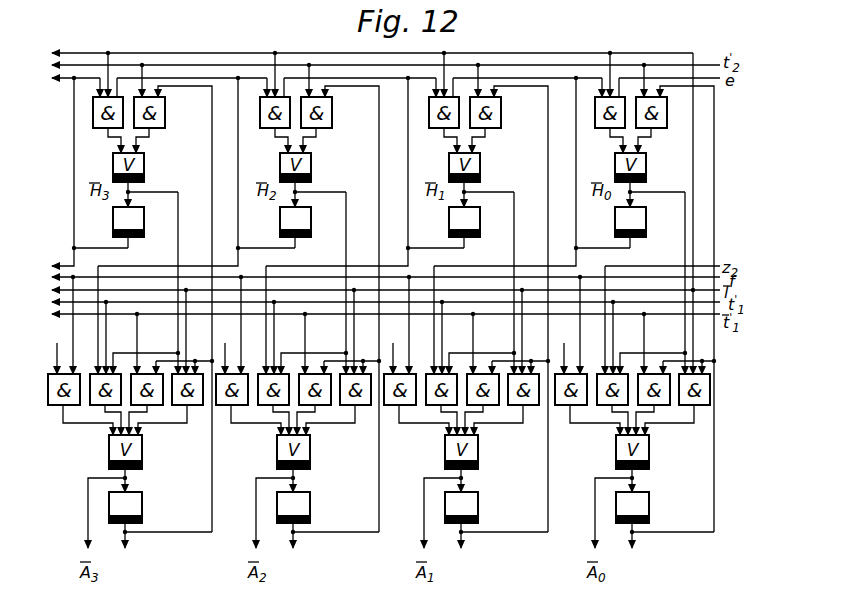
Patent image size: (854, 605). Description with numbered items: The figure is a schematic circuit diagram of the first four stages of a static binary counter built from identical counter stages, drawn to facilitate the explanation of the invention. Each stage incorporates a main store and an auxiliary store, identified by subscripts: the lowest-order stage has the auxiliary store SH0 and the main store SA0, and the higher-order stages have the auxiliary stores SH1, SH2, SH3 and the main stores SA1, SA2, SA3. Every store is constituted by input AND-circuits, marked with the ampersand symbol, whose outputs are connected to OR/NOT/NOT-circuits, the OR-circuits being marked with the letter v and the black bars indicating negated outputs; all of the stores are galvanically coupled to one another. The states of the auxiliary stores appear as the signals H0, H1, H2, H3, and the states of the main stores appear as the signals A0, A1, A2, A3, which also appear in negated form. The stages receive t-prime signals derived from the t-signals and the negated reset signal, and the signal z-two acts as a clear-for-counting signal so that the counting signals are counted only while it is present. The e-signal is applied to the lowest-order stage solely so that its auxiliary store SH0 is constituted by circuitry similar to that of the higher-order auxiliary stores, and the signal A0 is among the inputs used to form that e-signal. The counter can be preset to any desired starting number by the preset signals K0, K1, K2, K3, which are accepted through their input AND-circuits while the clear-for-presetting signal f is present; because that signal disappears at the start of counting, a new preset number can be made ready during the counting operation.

The preset signal for the fourth counter stage K3 is at (64, 365).
The auxiliary store output signal of the fourth counter stage H3 is at (132, 235).
The auxiliary store of the fourth counter stage SH3 is at (192, 188).
The main store of the fourth counter stage SA3 is at (186, 493).
The main store output signal of the fourth counter stage A3 is at (125, 538).
The preset signal for the third counter stage K2 is at (232, 365).
The auxiliary store output signal of the third counter stage H2 is at (299, 235).
The auxiliary store of the third counter stage SH2 is at (359, 188).
The main store of the third counter stage SA2 is at (354, 493).
The main store output signal of the third counter stage A2 is at (293, 538).
The preset signal for the second counter stage K1 is at (400, 365).
The auxiliary store output signal of the second counter stage H1 is at (468, 235).
The auxiliary store of the second counter stage SH1 is at (528, 188).
The main store of the second counter stage SA1 is at (522, 493).
The main store output signal of the second counter stage A1 is at (461, 538).
The preset signal for the lowest-order counter stage K0 is at (571, 365).
The auxiliary store output signal of the lowest-order counter stage H0 is at (635, 235).
The auxiliary store of the lowest-order counter stage SH0 is at (694, 188).
The main store of the lowest-order counter stage SA0 is at (693, 493).
The main store output signal of the lowest-order counter stage A0 is at (632, 538).